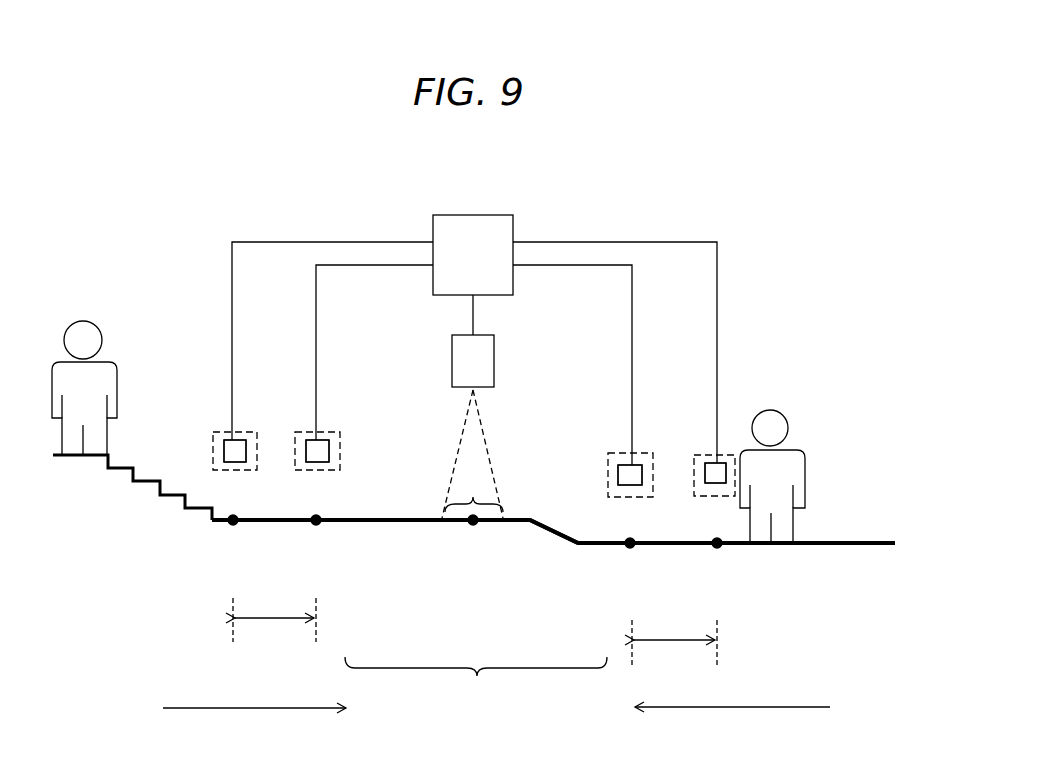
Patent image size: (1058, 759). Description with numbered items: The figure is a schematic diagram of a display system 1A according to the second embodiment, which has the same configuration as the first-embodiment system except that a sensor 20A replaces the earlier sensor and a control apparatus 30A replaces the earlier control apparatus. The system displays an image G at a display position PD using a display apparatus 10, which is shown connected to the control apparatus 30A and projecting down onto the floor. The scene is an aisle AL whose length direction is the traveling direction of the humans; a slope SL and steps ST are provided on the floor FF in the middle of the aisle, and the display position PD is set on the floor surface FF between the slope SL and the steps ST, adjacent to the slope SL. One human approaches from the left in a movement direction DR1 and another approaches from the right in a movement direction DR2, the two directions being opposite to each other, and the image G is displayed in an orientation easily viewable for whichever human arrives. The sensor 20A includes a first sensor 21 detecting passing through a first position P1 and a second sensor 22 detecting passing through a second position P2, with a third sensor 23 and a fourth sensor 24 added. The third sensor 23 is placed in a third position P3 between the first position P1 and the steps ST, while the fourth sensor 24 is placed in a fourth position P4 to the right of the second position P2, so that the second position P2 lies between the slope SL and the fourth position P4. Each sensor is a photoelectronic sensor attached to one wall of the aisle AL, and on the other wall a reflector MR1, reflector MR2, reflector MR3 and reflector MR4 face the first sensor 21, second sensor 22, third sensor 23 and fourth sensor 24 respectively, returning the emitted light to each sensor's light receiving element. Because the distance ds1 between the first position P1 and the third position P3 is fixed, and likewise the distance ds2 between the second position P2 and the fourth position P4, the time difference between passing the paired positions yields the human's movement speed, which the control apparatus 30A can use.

The display system 1A is at (788, 250).
The control apparatus 30A is at (513, 222).
The display apparatus 10 is at (494, 357).
The sensor 20A is at (476, 685).
The first sensor 21 is at (318, 463).
The second sensor 22 is at (618, 475).
The third sensor 23 is at (236, 463).
The fourth sensor 24 is at (708, 483).
The reflector MR1 is at (340, 445).
The reflector MR2 is at (607, 465).
The reflector MR3 is at (258, 442).
The reflector MR4 is at (694, 467).
The aisle AL is at (872, 430).
The floor FF is at (405, 516).
The steps ST is at (170, 476).
The slope SL is at (550, 532).
The image G is at (474, 492).
The display position PD is at (473, 528).
The first position P1 is at (316, 528).
The second position P2 is at (630, 551).
The third position P3 is at (233, 528).
The fourth position P4 is at (717, 551).
The distance ds1 is at (274, 621).
The distance ds2 is at (674, 643).
The movement direction DR1 is at (254, 695).
The movement direction DR2 is at (732, 694).